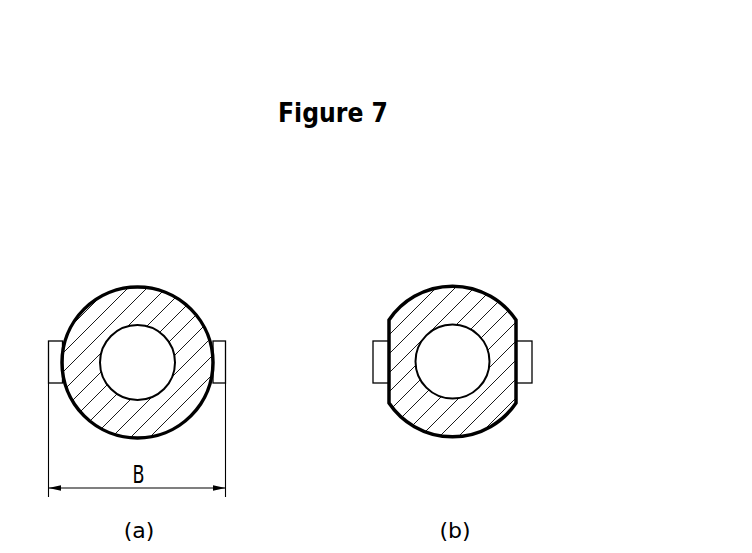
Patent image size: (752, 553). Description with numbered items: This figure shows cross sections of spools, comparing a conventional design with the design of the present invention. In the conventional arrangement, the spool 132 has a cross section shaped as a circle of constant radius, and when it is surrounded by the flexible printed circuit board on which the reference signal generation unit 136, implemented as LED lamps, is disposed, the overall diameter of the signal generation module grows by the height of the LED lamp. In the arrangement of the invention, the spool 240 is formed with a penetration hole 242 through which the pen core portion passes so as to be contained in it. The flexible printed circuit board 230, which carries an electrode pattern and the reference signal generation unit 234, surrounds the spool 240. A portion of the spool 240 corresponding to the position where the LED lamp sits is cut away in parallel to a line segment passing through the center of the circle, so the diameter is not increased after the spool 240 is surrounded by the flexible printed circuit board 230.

The spool 132 is at (145, 304).
The reference signal generation unit 136 is at (227, 357).
The flexible printed circuit board 230 is at (376, 276).
The reference signal generation unit 234 is at (523, 360).
The spool 240 is at (462, 307).
The penetration hole 242 is at (442, 362).